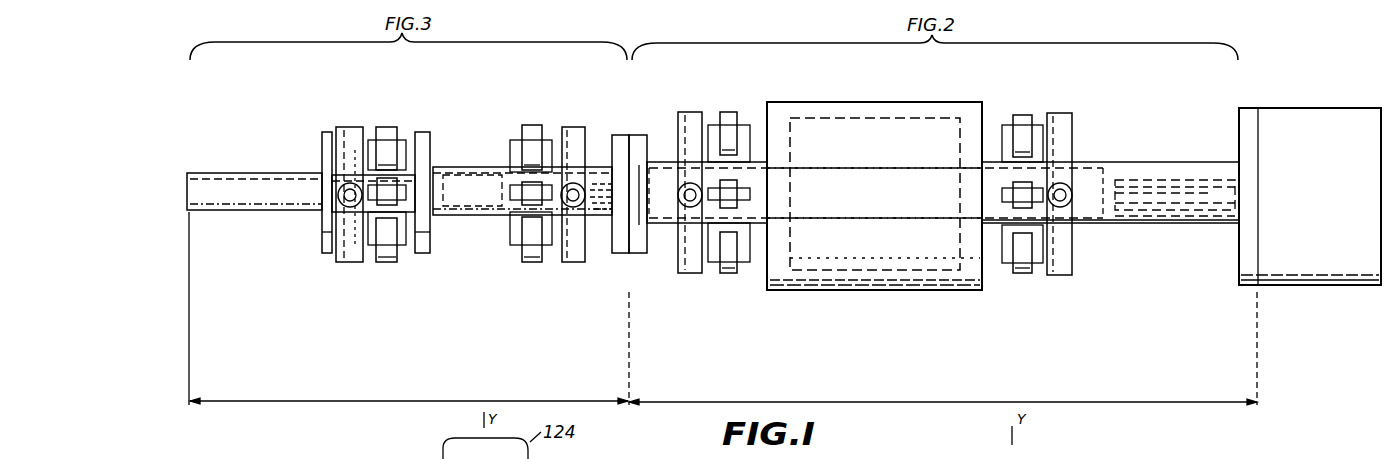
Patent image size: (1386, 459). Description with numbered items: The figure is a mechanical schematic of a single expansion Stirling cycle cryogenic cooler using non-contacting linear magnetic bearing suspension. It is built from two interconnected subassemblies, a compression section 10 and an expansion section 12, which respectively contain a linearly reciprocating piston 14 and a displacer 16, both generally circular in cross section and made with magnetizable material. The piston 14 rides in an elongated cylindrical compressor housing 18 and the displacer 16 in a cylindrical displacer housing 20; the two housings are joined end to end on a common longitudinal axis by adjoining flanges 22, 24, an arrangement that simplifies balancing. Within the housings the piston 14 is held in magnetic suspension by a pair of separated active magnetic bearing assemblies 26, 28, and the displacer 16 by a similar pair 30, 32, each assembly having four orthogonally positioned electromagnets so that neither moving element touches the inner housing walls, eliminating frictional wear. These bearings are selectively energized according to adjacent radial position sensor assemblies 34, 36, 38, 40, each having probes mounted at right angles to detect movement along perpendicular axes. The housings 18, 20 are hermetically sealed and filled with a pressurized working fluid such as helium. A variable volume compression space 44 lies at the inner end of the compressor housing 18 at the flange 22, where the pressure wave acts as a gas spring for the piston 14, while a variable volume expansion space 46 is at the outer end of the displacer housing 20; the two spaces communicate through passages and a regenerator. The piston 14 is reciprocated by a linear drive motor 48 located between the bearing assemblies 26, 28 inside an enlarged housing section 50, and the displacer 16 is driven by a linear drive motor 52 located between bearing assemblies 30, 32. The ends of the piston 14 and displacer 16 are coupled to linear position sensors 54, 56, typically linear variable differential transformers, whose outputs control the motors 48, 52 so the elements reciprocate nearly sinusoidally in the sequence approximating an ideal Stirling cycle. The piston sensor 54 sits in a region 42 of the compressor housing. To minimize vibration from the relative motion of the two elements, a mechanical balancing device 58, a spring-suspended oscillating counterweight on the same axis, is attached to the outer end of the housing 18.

The compression section subassembly 10 is at (943, 391).
The expansion section subassembly 12 is at (409, 390).
The piston 14 is at (866, 177).
The displacer 16 is at (316, 211).
The compressor housing 18 is at (1142, 163).
The displacer housing 20 is at (488, 167).
The flange 22 is at (640, 135).
The flange 24 is at (622, 135).
The magnetic bearing assembly 26 is at (1020, 273).
The magnetic bearing assembly 28 is at (729, 273).
The magnetic bearing assembly 30 is at (532, 262).
The magnetic bearing assembly 32 is at (385, 263).
The radial position sensor assembly 34 is at (1060, 113).
The radial position sensor assembly 36 is at (681, 113).
The radial position sensor assembly 38 is at (575, 126).
The radial position sensor assembly 40 is at (345, 128).
The region 42 is at (1187, 176).
The variable volume compression space 44 is at (639, 215).
The variable volume expansion space 46 is at (193, 178).
The linear drive motor 48 is at (858, 118).
The enlarged housing section 50 is at (952, 102).
The linear drive motor 52 is at (466, 216).
The linear position sensor 54 is at (1172, 212).
The linear position sensor 56 is at (608, 208).
The mechanical balancing device 58 is at (1310, 108).